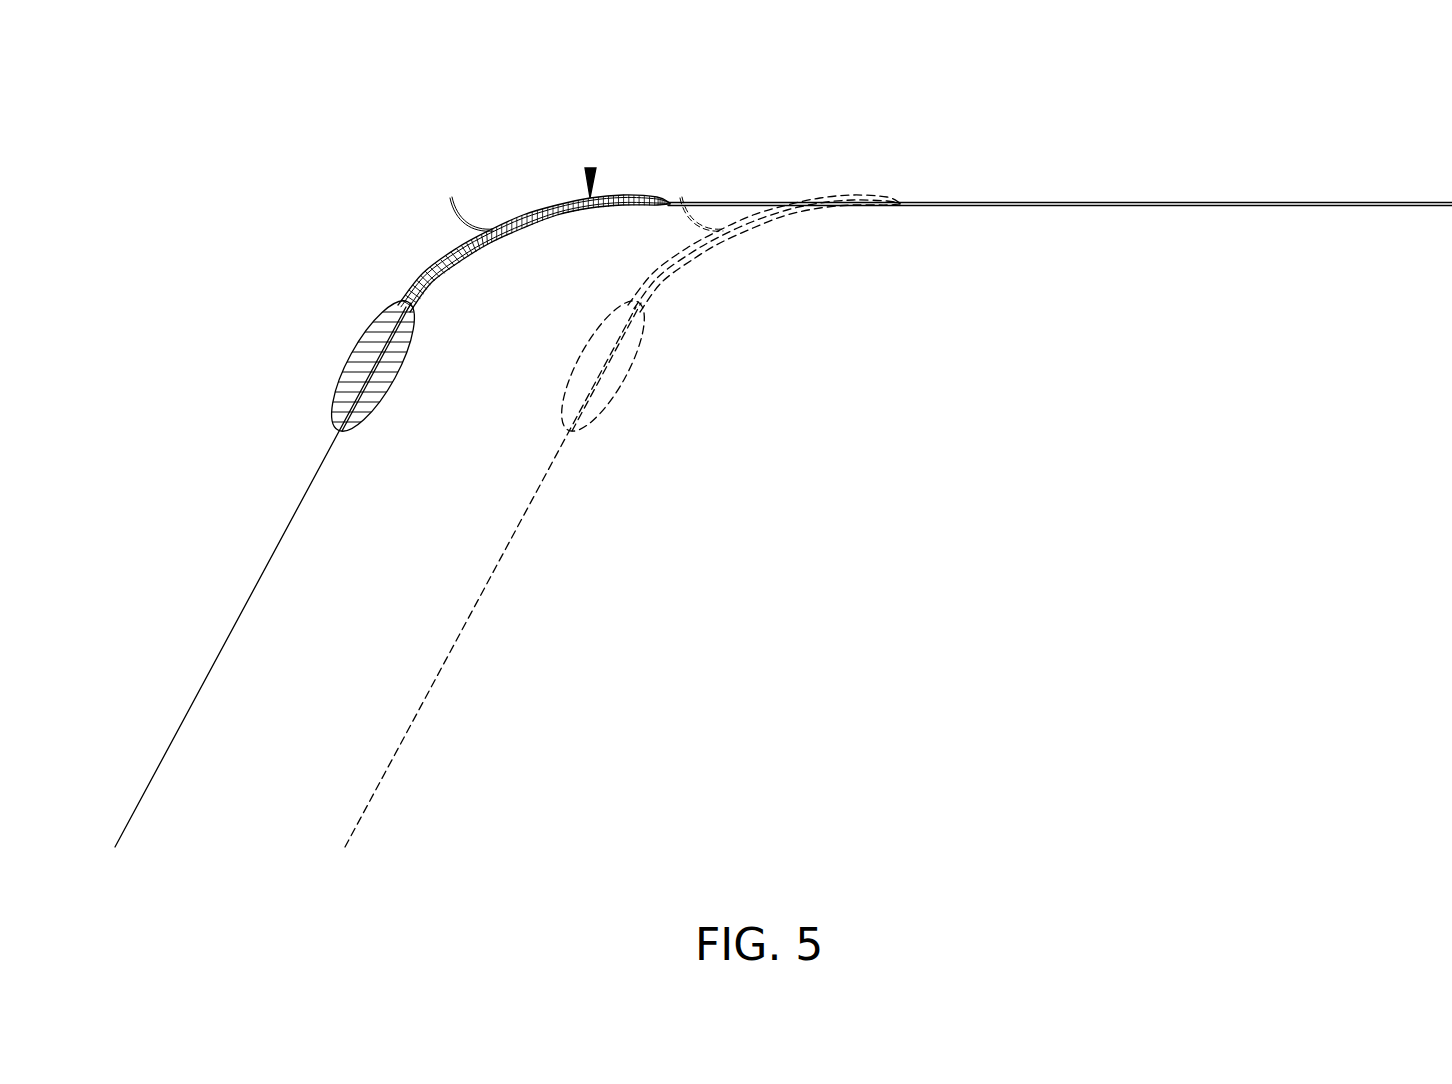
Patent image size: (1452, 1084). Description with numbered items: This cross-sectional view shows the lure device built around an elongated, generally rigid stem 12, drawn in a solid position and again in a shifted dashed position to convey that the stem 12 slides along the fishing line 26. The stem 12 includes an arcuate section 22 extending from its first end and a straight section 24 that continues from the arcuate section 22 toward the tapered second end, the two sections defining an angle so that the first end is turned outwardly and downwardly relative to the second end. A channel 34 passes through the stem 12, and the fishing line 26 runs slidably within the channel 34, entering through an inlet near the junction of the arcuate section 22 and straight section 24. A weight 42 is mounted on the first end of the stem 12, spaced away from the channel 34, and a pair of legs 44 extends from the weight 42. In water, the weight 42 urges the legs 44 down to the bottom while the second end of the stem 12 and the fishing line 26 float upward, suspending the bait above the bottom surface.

The stem 12 is at (537, 207).
The arcuate section 22 is at (434, 250).
The straight section 24 is at (637, 198).
The fishing line 26 is at (1095, 203).
The channel 34 is at (591, 168).
The weight 42 is at (345, 345).
The pair of legs 44 is at (222, 648).